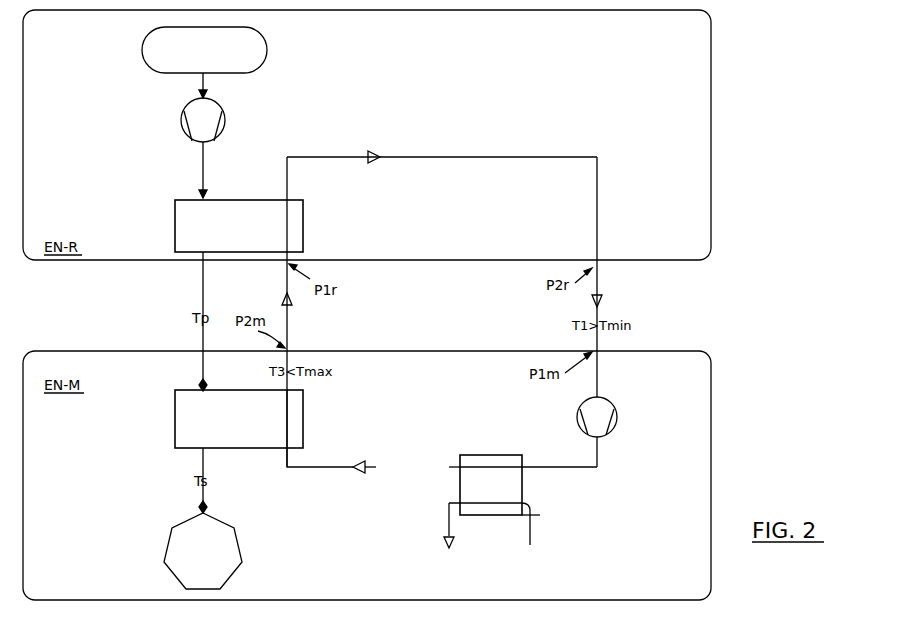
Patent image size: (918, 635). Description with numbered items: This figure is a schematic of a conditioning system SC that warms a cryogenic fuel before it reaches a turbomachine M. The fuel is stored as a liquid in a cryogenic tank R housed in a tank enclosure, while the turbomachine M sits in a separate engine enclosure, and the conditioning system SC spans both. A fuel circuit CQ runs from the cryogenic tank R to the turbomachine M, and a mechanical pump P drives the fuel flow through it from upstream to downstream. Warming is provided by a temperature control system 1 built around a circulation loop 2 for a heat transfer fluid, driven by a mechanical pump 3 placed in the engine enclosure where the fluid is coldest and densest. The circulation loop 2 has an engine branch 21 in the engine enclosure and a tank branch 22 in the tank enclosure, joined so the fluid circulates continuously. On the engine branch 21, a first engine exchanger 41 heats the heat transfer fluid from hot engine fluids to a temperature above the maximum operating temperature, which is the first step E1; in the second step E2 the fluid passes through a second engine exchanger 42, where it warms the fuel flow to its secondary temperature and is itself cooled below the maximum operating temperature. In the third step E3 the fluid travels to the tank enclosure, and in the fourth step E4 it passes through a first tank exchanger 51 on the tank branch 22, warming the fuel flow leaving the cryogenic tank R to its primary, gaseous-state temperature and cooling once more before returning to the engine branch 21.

The temperature control system 1 is at (597, 107).
The circulation loop 2 is at (605, 167).
The mechanical pump 3 is at (617, 413).
The engine branch 21 is at (320, 469).
The tank branch 22 is at (513, 157).
The first engine exchanger 41 is at (499, 496).
The second engine exchanger 42 is at (248, 427).
The first tank exchanger 51 is at (248, 237).
The cryogenic tank R is at (266, 44).
The mechanical pump P is at (225, 123).
The conditioning system SC is at (98, 127).
The fuel circuit CQ is at (195, 159).
The first step E1 is at (498, 449).
The second step E2 is at (328, 422).
The third step E3 is at (278, 301).
The fourth step E4 is at (328, 233).
The turbomachine M is at (210, 559).